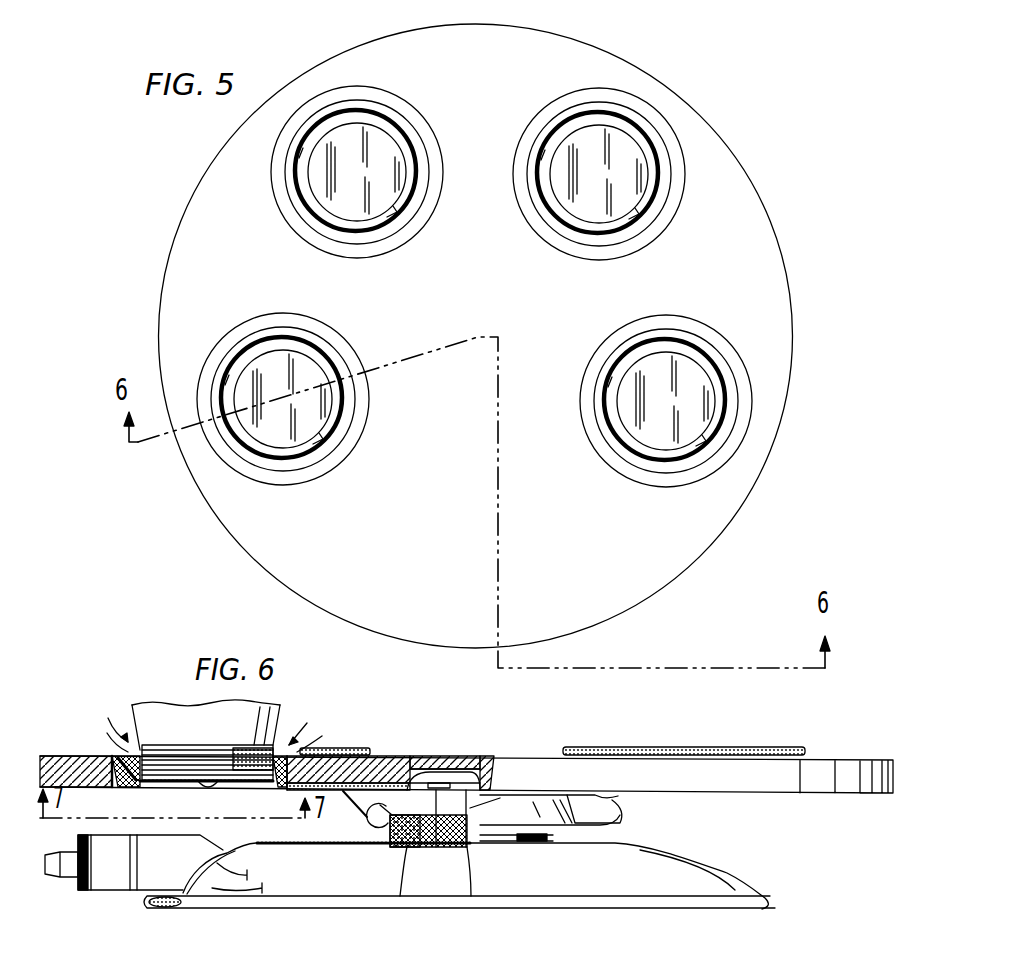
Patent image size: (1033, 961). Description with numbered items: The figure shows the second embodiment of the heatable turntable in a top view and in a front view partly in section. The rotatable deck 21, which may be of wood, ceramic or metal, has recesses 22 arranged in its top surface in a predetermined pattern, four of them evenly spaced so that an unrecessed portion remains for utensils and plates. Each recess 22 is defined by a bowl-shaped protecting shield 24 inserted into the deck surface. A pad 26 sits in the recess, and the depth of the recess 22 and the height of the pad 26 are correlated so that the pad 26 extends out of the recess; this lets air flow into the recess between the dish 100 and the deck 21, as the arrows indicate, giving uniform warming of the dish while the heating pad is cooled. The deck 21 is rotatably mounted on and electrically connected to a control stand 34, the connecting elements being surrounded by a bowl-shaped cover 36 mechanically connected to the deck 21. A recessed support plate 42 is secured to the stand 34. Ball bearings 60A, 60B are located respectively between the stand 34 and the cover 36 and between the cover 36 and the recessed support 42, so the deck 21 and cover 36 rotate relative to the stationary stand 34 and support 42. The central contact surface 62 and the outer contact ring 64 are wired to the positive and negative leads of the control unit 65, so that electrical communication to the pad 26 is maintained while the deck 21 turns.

In FIG. 5, the rotatable deck 21 is at (745, 206).
In FIG. 6, the rotatable deck 21 is at (866, 760).
In FIG. 5, the recess 22 is at (690, 348).
In FIG. 6, the recess 22 is at (125, 775).
In FIG. 6, the bowl-shaped protecting shield 24 is at (178, 788).
In FIG. 5, the pad 26 is at (370, 172).
In FIG. 6, the pad 26 is at (176, 778).
In FIG. 6, the control stand 34 is at (268, 844).
In FIG. 6, the bowl-shaped cover 36 is at (590, 822).
In FIG. 6, the recessed support plate 42 is at (404, 880).
In FIG. 6, the ball bearings 60A is at (374, 820).
In FIG. 6, the ball bearings 60B is at (393, 852).
In FIG. 6, the central contact surface 62 is at (462, 861).
In FIG. 6, the outer contact ring 64 is at (440, 862).
In FIG. 6, the control unit 65 is at (120, 871).
In FIG. 6, the dish 100 is at (157, 716).